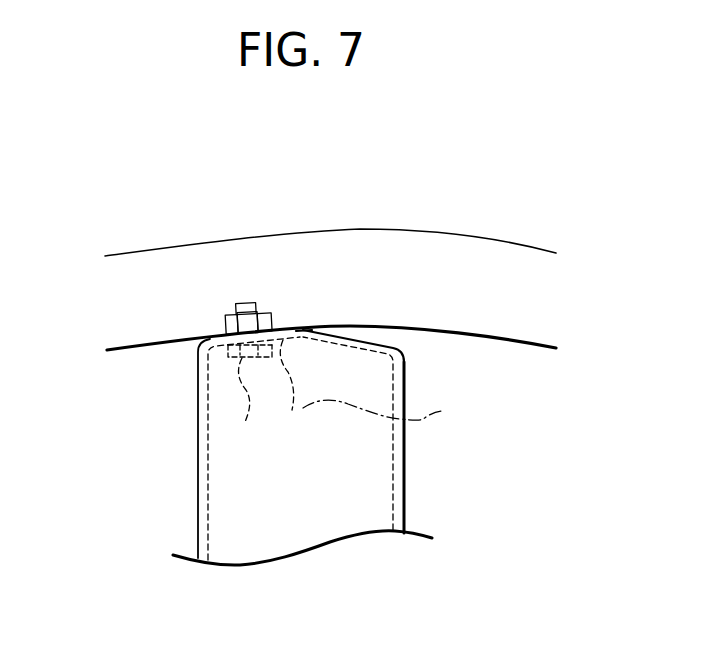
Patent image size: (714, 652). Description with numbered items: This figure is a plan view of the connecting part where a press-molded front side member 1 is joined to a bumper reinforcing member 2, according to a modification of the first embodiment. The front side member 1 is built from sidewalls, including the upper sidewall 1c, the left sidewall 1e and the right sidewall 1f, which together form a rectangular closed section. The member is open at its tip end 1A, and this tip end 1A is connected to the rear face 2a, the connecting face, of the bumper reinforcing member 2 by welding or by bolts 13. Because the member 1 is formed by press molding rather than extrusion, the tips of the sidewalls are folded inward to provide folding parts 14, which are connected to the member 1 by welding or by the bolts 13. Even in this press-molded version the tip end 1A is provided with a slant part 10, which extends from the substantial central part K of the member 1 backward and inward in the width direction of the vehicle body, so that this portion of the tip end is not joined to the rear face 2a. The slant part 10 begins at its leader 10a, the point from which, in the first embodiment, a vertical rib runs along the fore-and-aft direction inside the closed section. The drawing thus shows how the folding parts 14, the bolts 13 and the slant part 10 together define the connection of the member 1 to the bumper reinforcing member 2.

The front side member 1 is at (301, 490).
The tip end 1A is at (226, 357).
The upper sidewall 1c is at (298, 533).
The left sidewall 1e is at (197, 507).
The right sidewall 1f is at (406, 478).
The bumper reinforcing member 2 is at (378, 233).
The rear face 2a is at (153, 346).
The slant part 10 is at (378, 345).
The leader of the slant part 10a is at (304, 328).
The bolt 13 is at (249, 378).
The folding part 14 is at (284, 387).
The substantial central part K is at (386, 413).